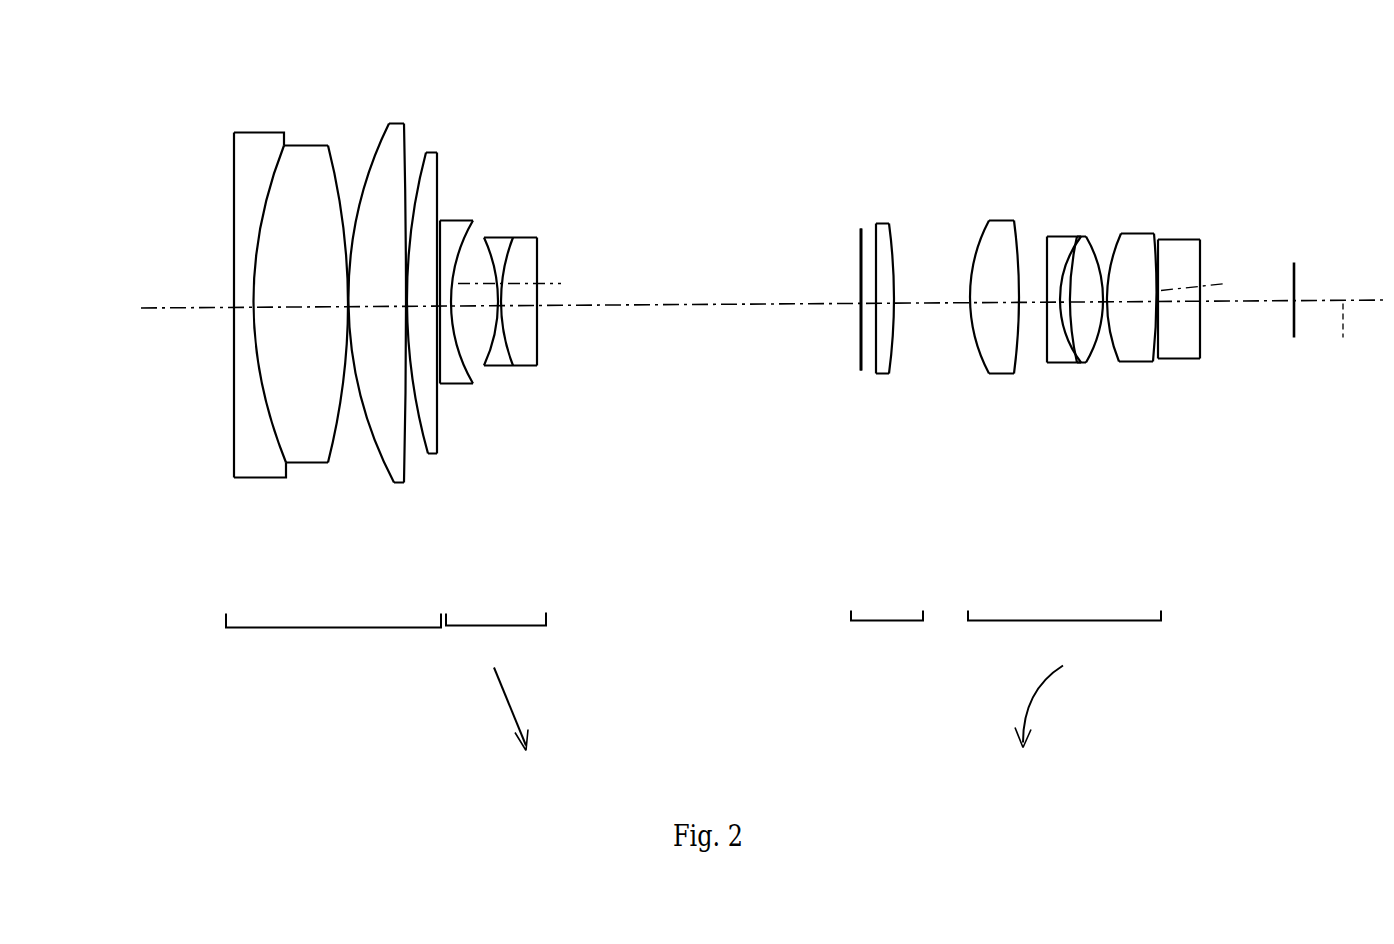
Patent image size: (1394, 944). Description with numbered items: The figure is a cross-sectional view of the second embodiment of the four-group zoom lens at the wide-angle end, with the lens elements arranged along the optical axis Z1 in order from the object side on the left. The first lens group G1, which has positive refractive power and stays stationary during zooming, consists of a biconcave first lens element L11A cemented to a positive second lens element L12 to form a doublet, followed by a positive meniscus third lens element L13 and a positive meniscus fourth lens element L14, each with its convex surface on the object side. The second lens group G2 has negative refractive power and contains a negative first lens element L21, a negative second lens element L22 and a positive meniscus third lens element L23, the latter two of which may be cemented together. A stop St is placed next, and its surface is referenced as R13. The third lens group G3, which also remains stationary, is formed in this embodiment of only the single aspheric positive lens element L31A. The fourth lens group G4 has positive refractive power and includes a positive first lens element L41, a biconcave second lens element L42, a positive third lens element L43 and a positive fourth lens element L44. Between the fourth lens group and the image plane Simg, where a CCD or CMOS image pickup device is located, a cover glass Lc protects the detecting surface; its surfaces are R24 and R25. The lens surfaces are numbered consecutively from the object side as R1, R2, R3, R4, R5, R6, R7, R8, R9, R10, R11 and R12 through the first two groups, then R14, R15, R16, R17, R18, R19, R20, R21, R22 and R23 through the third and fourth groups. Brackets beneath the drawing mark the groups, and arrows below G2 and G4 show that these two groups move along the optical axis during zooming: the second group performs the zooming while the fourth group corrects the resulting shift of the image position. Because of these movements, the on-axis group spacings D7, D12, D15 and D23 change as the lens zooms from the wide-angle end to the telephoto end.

The first lens element of the first lens group L11A is at (257, 146).
The second lens element of the first lens group L12 is at (310, 155).
The third lens element of the first lens group L13 is at (397, 128).
The fourth lens element of the first lens group L14 is at (430, 158).
The first lens element of the second lens group L21 is at (457, 230).
The second lens element of the second lens group L22 is at (497, 246).
The third lens element of the second lens group L23 is at (525, 245).
The lens element of the third lens group L31A is at (883, 227).
The first lens element of the fourth lens group L41 is at (1000, 230).
The second lens element of the fourth lens group L42 is at (1057, 245).
The third lens element of the fourth lens group L43 is at (1083, 250).
The fourth lens element of the fourth lens group L44 is at (1135, 245).
The cover glass Lc is at (1185, 248).
The stop St is at (858, 236).
The image plane Simg is at (1290, 264).
The optical axis Z1 is at (1346, 342).
The first lens group G1 is at (333, 638).
The second lens group G2 is at (496, 682).
The third lens group G3 is at (887, 634).
The fourth lens group G4 is at (1064, 679).
The on-axis surface spacing D7 is at (527, 283).
The on-axis surface spacing D12 is at (707, 285).
The on-axis surface spacing D15 is at (934, 282).
The on-axis surface spacing D23 is at (1216, 283).
The lens surface R1 is at (233, 413).
The lens surface R2 is at (273, 438).
The lens surface R3 is at (339, 462).
The lens surface R4 is at (370, 456).
The lens surface R5 is at (408, 472).
The lens surface R6 is at (415, 443).
The lens surface R7 is at (438, 448).
The lens surface R8 is at (441, 365).
The lens surface R9 is at (472, 376).
The lens surface R10 is at (487, 356).
The lens surface R11 is at (512, 350).
The lens surface R12 is at (537, 321).
The stop surface R13 is at (815, 281).
The lens surface R14 is at (871, 368).
The lens surface R15 is at (893, 358).
The lens surface R16 is at (973, 342).
The lens surface R17 is at (1017, 358).
The lens surface R18 is at (1045, 348).
The lens surface R19 is at (1062, 350).
The lens surface R20 is at (1075, 345).
The lens surface R21 is at (1097, 348).
The lens surface R22 is at (1118, 358).
The lens surface R23 is at (1148, 348).
The cover glass surface R24 is at (1160, 336).
The cover glass surface R25 is at (1200, 320).